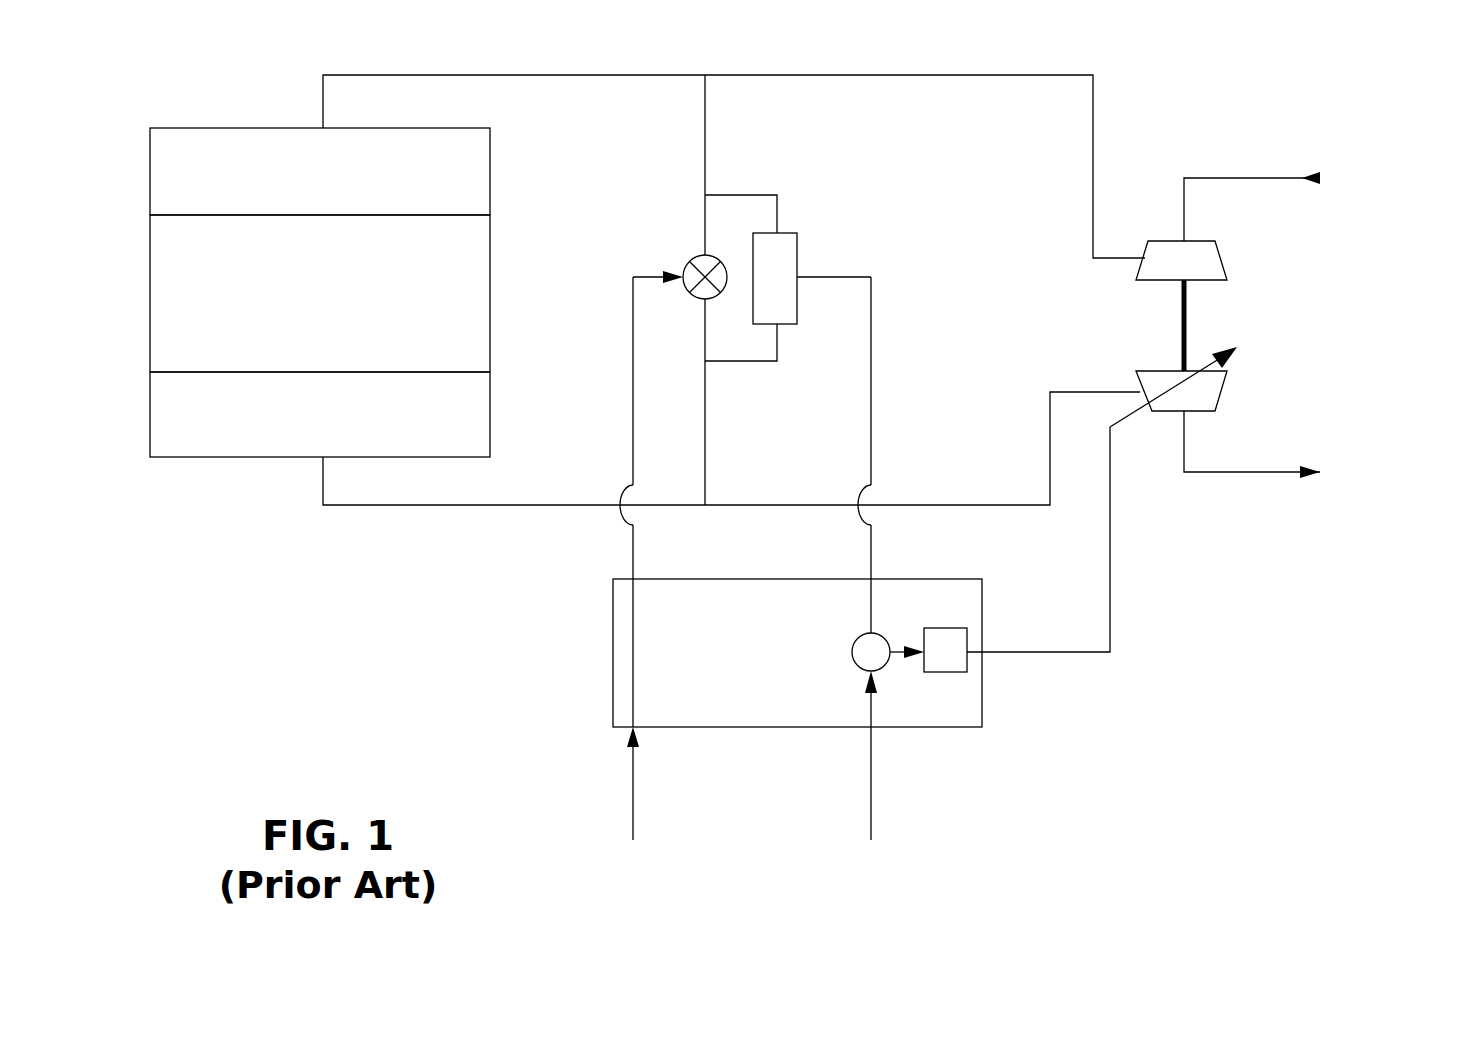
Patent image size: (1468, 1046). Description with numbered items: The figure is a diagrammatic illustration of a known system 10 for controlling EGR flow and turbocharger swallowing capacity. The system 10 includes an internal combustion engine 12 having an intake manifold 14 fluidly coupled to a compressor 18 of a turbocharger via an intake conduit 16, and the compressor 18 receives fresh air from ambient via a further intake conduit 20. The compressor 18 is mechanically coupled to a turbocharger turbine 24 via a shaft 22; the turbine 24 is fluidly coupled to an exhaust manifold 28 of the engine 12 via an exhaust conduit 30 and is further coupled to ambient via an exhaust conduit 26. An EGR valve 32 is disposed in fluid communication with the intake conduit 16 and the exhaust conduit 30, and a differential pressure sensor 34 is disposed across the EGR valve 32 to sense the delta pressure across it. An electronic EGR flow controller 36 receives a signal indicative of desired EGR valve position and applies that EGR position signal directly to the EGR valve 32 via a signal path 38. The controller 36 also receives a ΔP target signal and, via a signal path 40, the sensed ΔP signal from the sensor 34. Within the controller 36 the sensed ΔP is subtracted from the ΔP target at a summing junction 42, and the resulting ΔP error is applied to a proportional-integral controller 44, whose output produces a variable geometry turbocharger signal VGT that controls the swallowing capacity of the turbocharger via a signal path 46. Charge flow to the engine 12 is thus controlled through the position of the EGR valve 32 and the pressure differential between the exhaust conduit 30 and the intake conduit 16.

The system 10 is at (440, 659).
The internal combustion engine 12 is at (490, 287).
The intake manifold 14 is at (490, 165).
The intake conduit 16 is at (617, 75).
The compressor 18 is at (1163, 241).
The intake conduit 20 is at (1248, 178).
The shaft 22 is at (1182, 333).
The turbocharger turbine 24 is at (1168, 413).
The exhaust conduit 26 is at (1253, 474).
The exhaust manifold 28 is at (490, 410).
The exhaust conduit 30 is at (454, 508).
The EGR valve 32 is at (694, 258).
The differential pressure sensor 34 is at (797, 257).
The electronic EGR flow controller 36 is at (613, 648).
The signal path 38 is at (633, 559).
The signal path 40 is at (871, 559).
The summing junction 42 is at (885, 639).
The proportional-integral controller 44 is at (944, 672).
The signal path 46 is at (1110, 585).